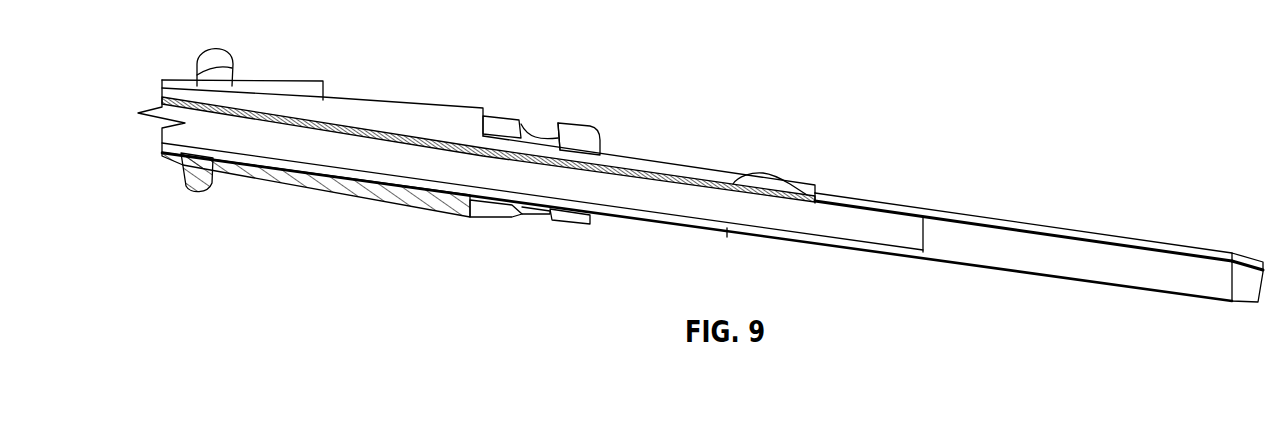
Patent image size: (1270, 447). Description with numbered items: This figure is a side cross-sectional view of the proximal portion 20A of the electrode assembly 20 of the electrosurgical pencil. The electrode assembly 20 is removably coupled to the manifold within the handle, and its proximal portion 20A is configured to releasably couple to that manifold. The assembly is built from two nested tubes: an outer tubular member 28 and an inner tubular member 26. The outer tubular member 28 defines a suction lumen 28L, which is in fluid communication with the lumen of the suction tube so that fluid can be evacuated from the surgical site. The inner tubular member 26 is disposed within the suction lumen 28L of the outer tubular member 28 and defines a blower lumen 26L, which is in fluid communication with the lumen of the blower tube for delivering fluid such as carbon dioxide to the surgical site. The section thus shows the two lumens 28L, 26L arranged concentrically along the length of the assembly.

The electrode assembly 20 is at (350, 210).
The proximal portion of the electrode assembly 20A is at (487, 239).
The outer tubular member 28 is at (661, 155).
The suction lumen 28L is at (768, 182).
The inner tubular member 26 is at (973, 268).
The blower lumen 26L is at (1155, 273).